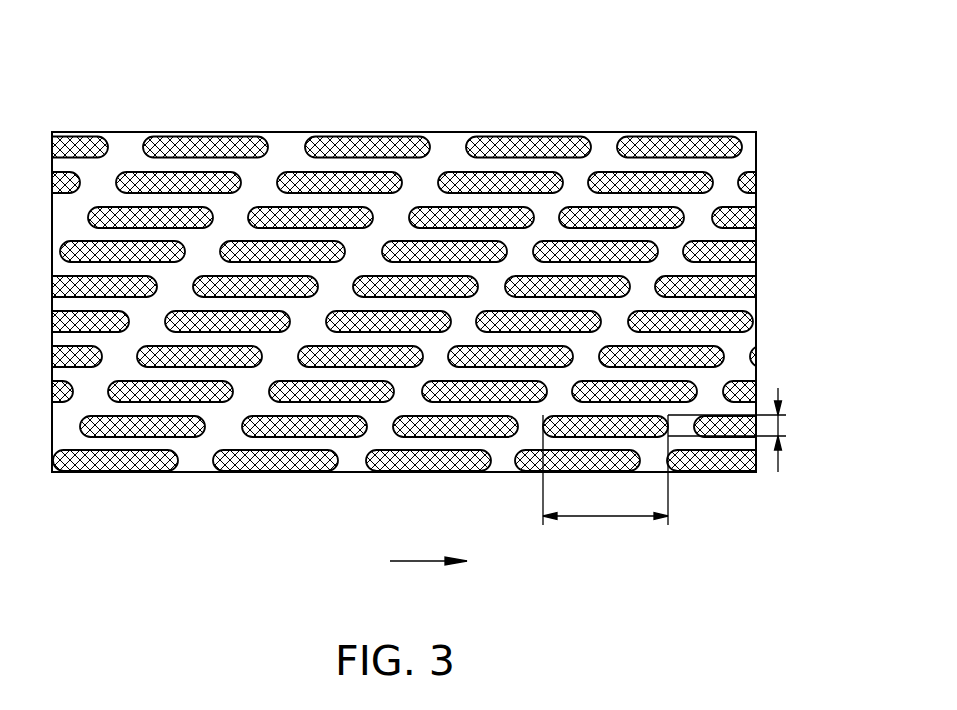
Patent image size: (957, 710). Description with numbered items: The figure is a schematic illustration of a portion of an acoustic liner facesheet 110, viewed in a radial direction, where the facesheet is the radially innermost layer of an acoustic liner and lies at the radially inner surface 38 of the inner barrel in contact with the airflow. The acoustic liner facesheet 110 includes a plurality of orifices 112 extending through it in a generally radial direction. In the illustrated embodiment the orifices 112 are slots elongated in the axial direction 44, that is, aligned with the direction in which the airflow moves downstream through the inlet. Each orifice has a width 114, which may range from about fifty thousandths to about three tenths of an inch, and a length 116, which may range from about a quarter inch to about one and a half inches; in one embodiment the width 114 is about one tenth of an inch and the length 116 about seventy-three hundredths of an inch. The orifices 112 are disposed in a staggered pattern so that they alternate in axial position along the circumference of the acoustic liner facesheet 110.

The radially inner surface 38 is at (195, 455).
The axial direction 44 is at (407, 561).
The acoustic liner facesheet 110 is at (437, 338).
The orifices 112 is at (408, 137).
The width 114 is at (778, 388).
The length 116 is at (605, 516).